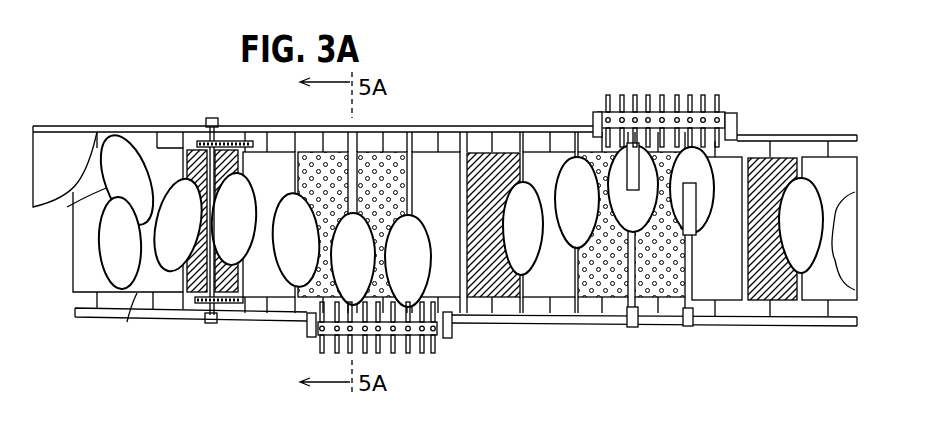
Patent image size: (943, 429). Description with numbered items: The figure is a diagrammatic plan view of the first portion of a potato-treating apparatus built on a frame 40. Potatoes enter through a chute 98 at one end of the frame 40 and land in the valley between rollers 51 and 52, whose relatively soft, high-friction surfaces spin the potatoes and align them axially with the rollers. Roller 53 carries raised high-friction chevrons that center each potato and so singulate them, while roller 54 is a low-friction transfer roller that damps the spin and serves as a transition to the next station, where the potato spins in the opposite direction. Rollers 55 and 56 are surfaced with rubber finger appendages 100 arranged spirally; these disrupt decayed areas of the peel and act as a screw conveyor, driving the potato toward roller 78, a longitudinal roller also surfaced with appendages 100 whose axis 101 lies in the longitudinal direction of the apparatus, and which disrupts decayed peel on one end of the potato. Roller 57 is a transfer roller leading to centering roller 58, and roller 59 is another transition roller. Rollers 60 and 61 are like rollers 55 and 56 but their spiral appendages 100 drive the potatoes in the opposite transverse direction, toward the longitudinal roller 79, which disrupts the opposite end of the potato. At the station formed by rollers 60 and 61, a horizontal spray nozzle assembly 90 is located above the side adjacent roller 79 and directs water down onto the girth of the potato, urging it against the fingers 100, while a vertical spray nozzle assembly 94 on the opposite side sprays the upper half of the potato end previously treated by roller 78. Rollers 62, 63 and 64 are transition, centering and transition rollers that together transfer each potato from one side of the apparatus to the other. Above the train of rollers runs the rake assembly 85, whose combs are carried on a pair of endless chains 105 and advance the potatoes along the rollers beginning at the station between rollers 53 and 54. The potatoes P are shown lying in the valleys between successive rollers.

The frame 40 is at (80, 312).
The roller 51 is at (80, 258).
The roller 52 is at (132, 322).
The roller 53 is at (192, 148).
The transfer roller 54 is at (258, 292).
The roller 55 is at (313, 152).
The roller 56 is at (400, 153).
The transfer roller 57 is at (443, 153).
The centering roller 58 is at (503, 153).
The transition roller 59 is at (533, 296).
The roller 60 is at (597, 298).
The roller 61 is at (688, 287).
The transition roller 62 is at (735, 157).
The centering roller 63 is at (788, 157).
The transition roller 64 is at (810, 300).
The roller 78 is at (313, 348).
The roller 79 is at (663, 97).
The rake assembly 85 is at (245, 133).
The horizontal spray nozzle assembly 90 is at (628, 152).
The vertical spray nozzle assembly 94 is at (685, 330).
The chute 98 is at (77, 174).
The rubber finger appendages 100 is at (377, 167).
The axis of roller 78 101 is at (445, 338).
The endless chains 105 is at (223, 140).
The pouch P is at (107, 221).